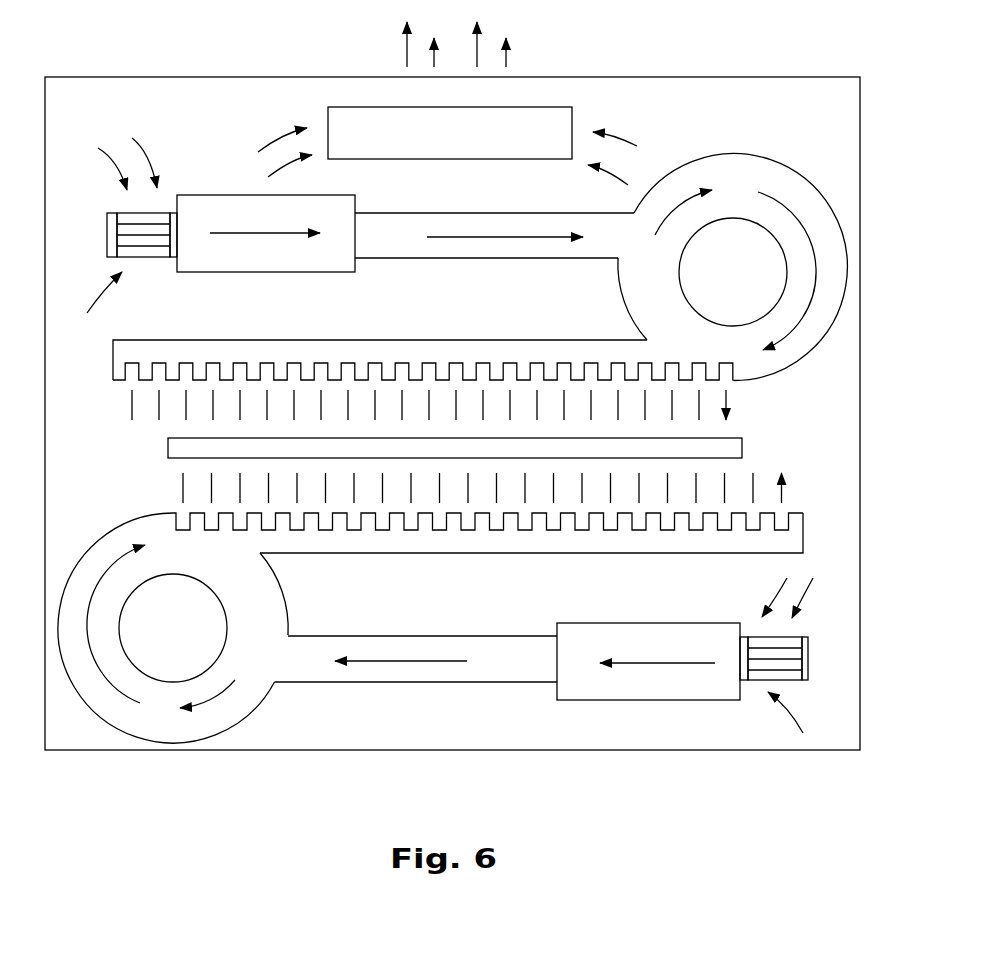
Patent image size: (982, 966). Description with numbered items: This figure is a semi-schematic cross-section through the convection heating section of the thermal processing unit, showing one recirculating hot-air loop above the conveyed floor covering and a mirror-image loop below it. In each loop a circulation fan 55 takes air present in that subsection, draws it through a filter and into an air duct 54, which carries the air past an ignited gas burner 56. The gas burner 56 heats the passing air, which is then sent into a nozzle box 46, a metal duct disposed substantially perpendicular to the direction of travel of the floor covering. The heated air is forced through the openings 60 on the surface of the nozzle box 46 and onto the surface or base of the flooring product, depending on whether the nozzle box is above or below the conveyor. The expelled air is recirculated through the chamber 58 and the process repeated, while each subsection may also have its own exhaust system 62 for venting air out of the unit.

The nozzle box 46 is at (435, 340).
The air duct 54 is at (532, 258).
The fan 55 is at (107, 230).
The gas burner 56 is at (258, 273).
The cyclone chamber 58 is at (750, 153).
The openings 60 is at (128, 385).
The exhaust system 62 is at (547, 127).